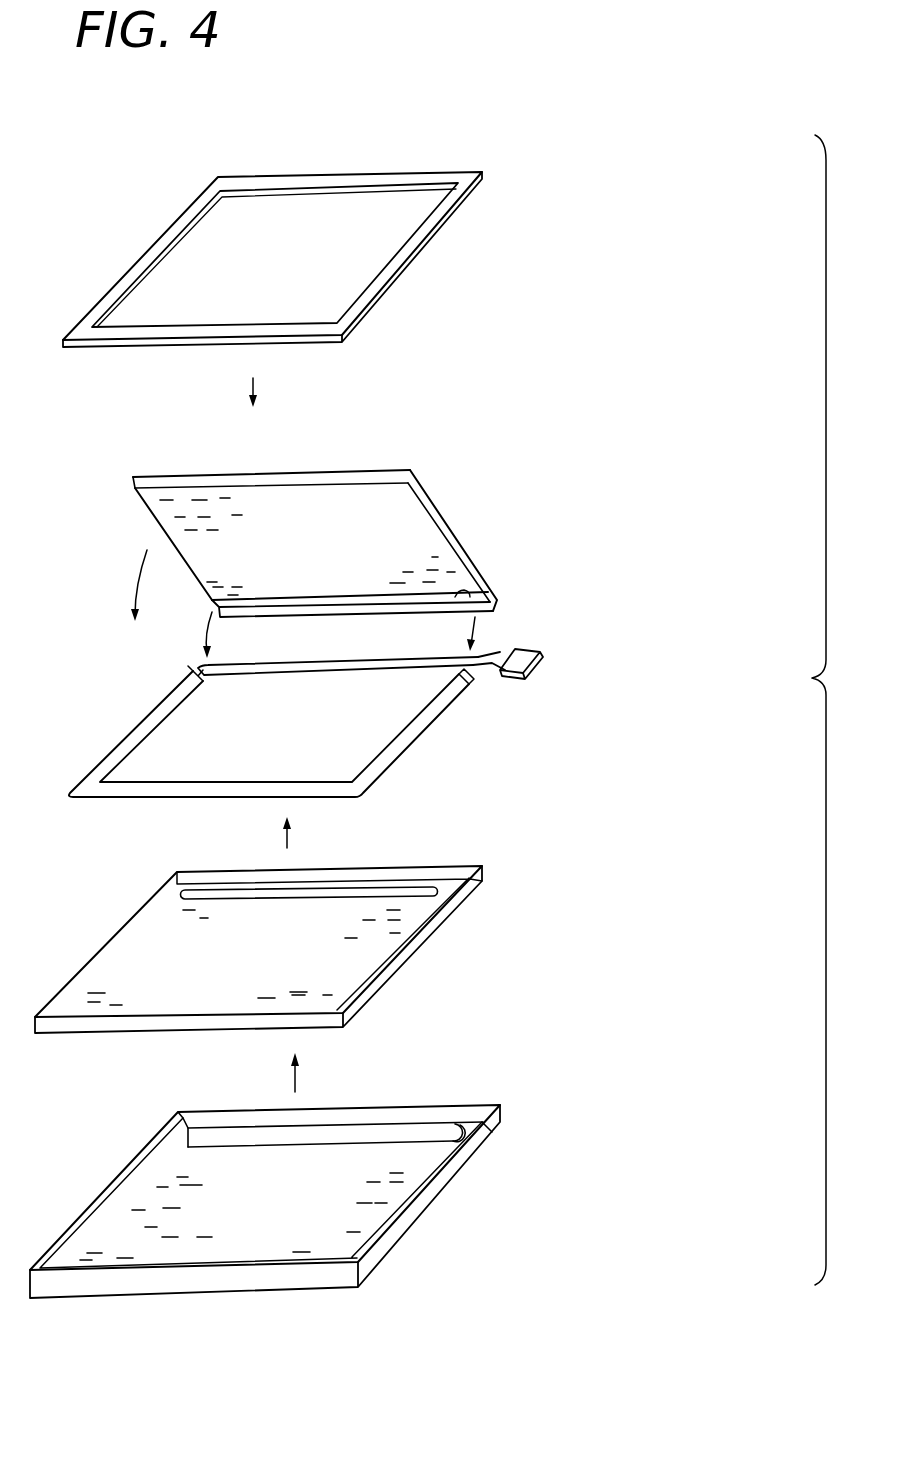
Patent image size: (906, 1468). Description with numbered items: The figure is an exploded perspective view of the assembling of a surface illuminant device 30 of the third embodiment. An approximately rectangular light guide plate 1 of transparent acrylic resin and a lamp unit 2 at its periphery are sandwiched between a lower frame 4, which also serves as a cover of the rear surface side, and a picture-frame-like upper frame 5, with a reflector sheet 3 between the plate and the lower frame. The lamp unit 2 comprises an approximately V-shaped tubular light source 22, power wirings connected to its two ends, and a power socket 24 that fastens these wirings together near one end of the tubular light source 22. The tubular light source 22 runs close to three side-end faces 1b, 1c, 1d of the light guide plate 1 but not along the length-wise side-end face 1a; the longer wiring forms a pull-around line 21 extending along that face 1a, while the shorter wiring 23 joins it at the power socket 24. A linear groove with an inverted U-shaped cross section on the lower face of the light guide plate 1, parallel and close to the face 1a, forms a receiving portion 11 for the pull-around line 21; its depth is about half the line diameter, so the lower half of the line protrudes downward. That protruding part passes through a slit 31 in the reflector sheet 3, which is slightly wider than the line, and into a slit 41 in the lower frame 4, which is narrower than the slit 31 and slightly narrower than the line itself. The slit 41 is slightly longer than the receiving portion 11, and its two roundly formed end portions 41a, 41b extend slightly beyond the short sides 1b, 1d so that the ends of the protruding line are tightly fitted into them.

The surface illuminant device 30 is at (352, 101).
The upper frame 5 is at (443, 213).
The light guide plate 1 is at (430, 536).
The length-wise side-end face 1a is at (337, 615).
The side-end face 1b is at (157, 525).
The side-end face 1c is at (213, 482).
The side-end face 1d is at (432, 507).
The receiving portion 11 is at (458, 597).
The lamp unit 2 is at (409, 723).
The pull-around line 21 is at (397, 670).
The tubular light source 22 is at (398, 760).
The power wiring 23 is at (498, 675).
The power socket 24 is at (556, 654).
The reflector sheet 3 is at (385, 933).
The slit 31 is at (413, 888).
The lower frame 4 is at (314, 1170).
The slit 41 is at (388, 1113).
The end portion of slit 41a is at (467, 1137).
The end portion of slit 41b is at (190, 1137).